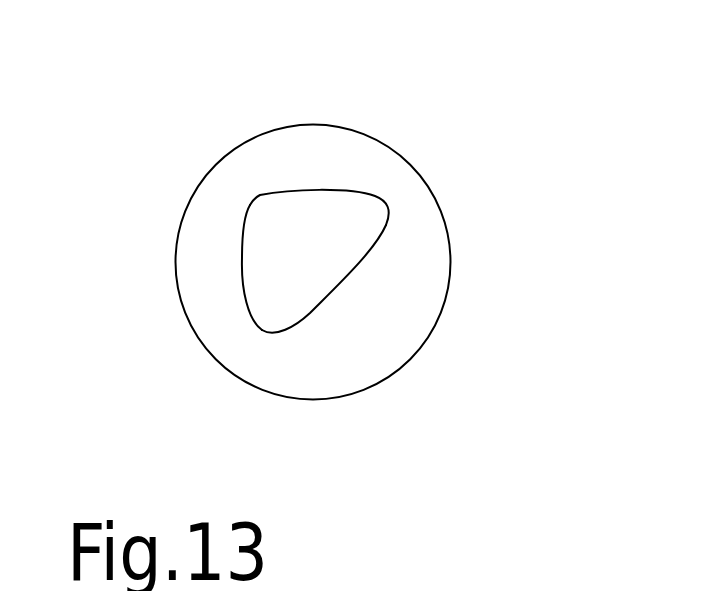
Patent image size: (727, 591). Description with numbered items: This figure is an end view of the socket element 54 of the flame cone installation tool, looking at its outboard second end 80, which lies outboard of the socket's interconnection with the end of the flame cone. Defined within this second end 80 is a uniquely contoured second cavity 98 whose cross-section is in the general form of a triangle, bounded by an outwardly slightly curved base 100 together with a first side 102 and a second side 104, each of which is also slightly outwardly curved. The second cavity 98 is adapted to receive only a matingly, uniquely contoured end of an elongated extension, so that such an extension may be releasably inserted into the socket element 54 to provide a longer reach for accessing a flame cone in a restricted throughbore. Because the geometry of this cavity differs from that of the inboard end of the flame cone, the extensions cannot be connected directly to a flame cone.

The socket element 54 is at (390, 244).
The second end of the socket 80 is at (383, 143).
The second cavity 98 is at (226, 267).
The base 100 is at (320, 190).
The first side 102 is at (240, 255).
The second side 104 is at (327, 300).